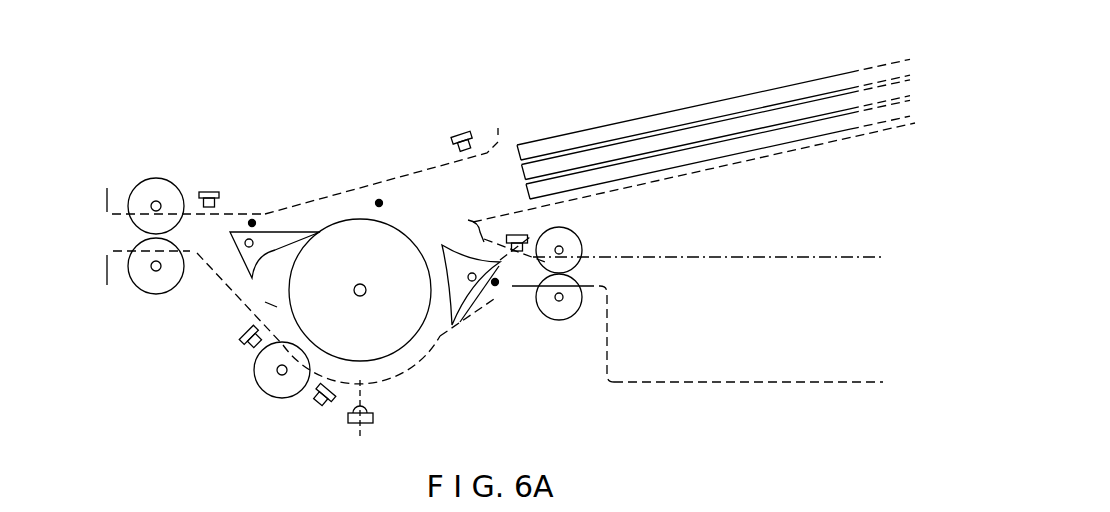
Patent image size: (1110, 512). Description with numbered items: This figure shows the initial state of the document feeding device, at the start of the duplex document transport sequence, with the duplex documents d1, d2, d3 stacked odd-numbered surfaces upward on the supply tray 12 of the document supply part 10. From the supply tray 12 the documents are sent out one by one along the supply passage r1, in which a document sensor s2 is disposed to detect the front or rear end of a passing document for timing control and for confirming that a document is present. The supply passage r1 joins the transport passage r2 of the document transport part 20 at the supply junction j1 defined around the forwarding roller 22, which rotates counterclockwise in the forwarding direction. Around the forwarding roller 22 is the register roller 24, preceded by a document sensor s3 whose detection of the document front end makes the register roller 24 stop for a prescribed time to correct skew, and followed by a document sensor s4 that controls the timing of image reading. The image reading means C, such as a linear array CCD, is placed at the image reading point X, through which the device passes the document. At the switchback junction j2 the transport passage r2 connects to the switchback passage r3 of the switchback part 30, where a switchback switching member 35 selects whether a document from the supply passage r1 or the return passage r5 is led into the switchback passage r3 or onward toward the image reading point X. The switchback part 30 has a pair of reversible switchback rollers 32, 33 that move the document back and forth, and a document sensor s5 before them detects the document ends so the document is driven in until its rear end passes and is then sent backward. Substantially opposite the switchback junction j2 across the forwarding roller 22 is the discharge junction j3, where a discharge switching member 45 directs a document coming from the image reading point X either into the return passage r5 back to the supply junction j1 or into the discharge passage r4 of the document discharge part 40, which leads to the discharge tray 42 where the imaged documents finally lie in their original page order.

The document supply part 10 is at (715, 116).
The supply tray 12 is at (657, 180).
The document transport part 20 is at (360, 178).
The forwarding roller 22 is at (403, 330).
The register roller 24 is at (258, 380).
The switchback part 30 is at (179, 219).
The switchback roller 32 is at (144, 282).
The switchback roller 33 is at (152, 190).
The switchback switching member 35 is at (295, 232).
The document discharge part 40 is at (734, 369).
The discharge tray 42 is at (723, 383).
The discharge switching member 45 is at (463, 288).
The first page document d1 is at (784, 90).
The second document d2 is at (780, 118).
The third document d3 is at (887, 118).
The supply passage r1 is at (427, 195).
The transport passage r2 is at (267, 312).
The switchback passage r3 is at (207, 233).
The discharge passage r4 is at (590, 273).
The return passage r5 is at (481, 245).
The supply junction j1 is at (379, 200).
The switchback junction j2 is at (252, 220).
The discharge junction j3 is at (495, 282).
The document sensor s2 is at (469, 128).
The document sensor s3 is at (240, 339).
The document sensor s4 is at (316, 408).
The document sensor s5 is at (208, 190).
The image reading means C is at (374, 418).
The image reading point X is at (360, 422).